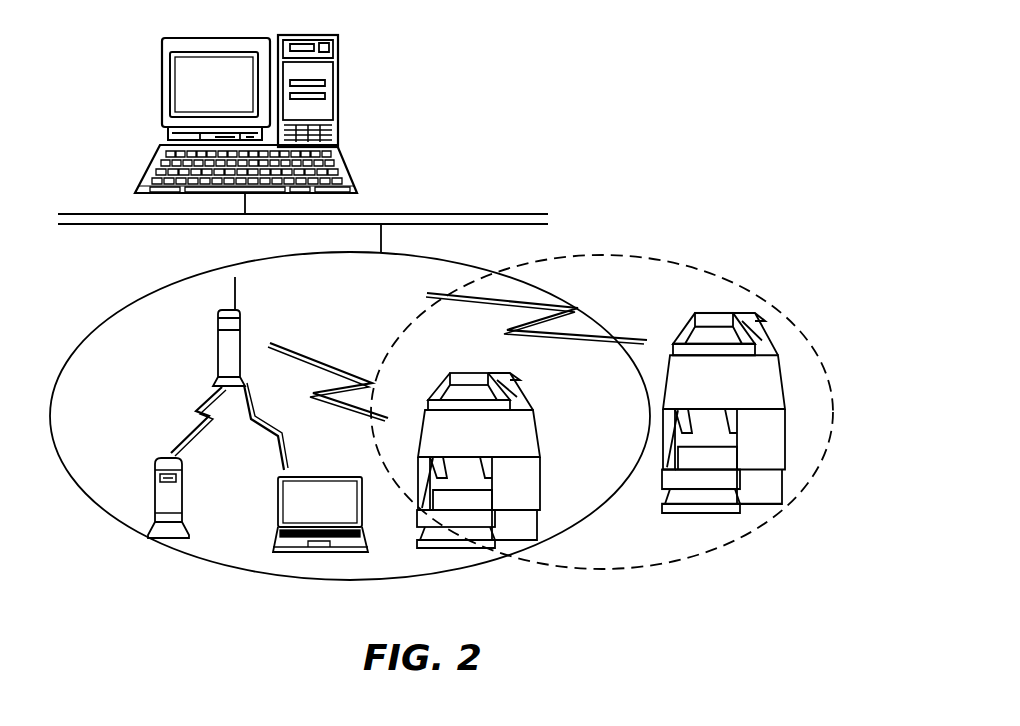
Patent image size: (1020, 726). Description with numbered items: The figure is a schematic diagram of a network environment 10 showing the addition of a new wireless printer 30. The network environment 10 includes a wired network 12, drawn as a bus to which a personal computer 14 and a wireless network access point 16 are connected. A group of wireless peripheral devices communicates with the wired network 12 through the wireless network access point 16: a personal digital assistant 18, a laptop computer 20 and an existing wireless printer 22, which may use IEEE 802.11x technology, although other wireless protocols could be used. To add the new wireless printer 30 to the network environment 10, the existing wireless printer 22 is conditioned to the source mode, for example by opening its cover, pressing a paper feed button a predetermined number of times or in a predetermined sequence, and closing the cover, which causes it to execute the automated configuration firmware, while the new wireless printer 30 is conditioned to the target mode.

The network environment 10 is at (488, 179).
The wired network 12 is at (391, 221).
The personal computer 14 is at (338, 87).
The wireless network access point 16 is at (217, 343).
The personal digital assistant 18 is at (153, 492).
The laptop computer 20 is at (300, 477).
The wireless printer 22 is at (452, 548).
The new wireless printer 30 is at (702, 313).